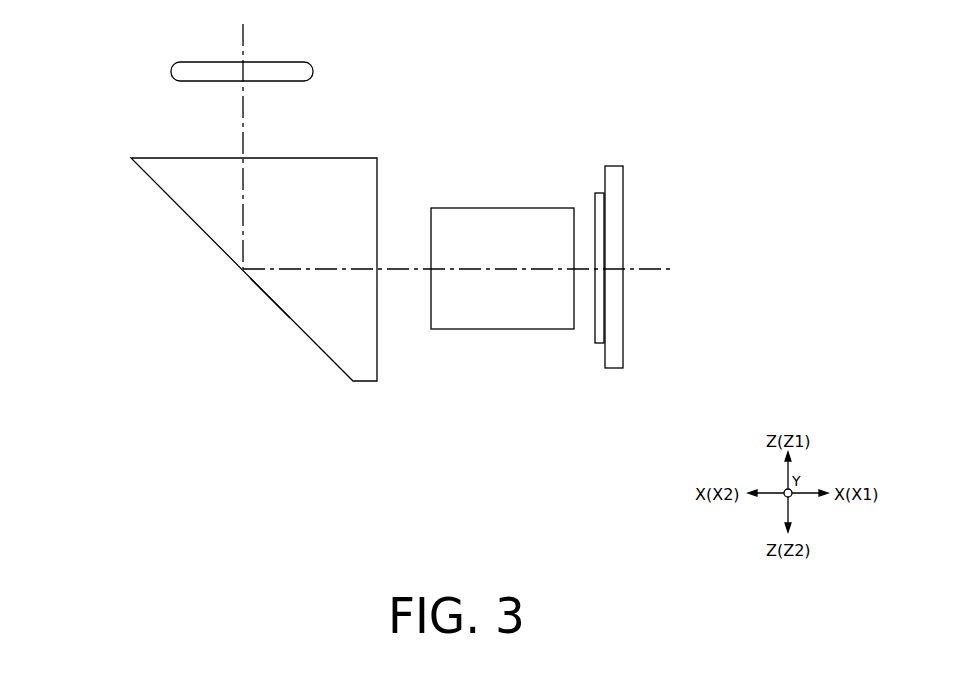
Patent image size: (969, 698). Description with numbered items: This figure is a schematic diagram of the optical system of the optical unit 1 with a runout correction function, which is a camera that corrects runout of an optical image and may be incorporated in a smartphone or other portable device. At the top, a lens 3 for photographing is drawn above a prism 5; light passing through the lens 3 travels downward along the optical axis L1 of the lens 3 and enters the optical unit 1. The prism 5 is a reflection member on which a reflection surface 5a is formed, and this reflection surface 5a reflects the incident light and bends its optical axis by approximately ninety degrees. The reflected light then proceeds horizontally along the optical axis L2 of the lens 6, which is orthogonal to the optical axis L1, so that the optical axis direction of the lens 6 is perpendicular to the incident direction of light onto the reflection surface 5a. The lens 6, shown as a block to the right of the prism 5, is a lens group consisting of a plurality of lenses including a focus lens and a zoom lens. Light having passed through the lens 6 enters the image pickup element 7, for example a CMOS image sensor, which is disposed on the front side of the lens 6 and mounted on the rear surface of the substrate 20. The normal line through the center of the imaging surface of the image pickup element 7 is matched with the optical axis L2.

The optical unit with a runout correction function 1 is at (85, 130).
The lens 3 is at (313, 72).
The prism 5 is at (355, 157).
The reflection surface 5a is at (268, 296).
The lens 6 is at (503, 207).
The image pickup element 7 is at (600, 192).
The substrate 20 is at (612, 165).
The optical axis of the lens L1 is at (240, 40).
The optical axis of the lens L2 is at (651, 272).